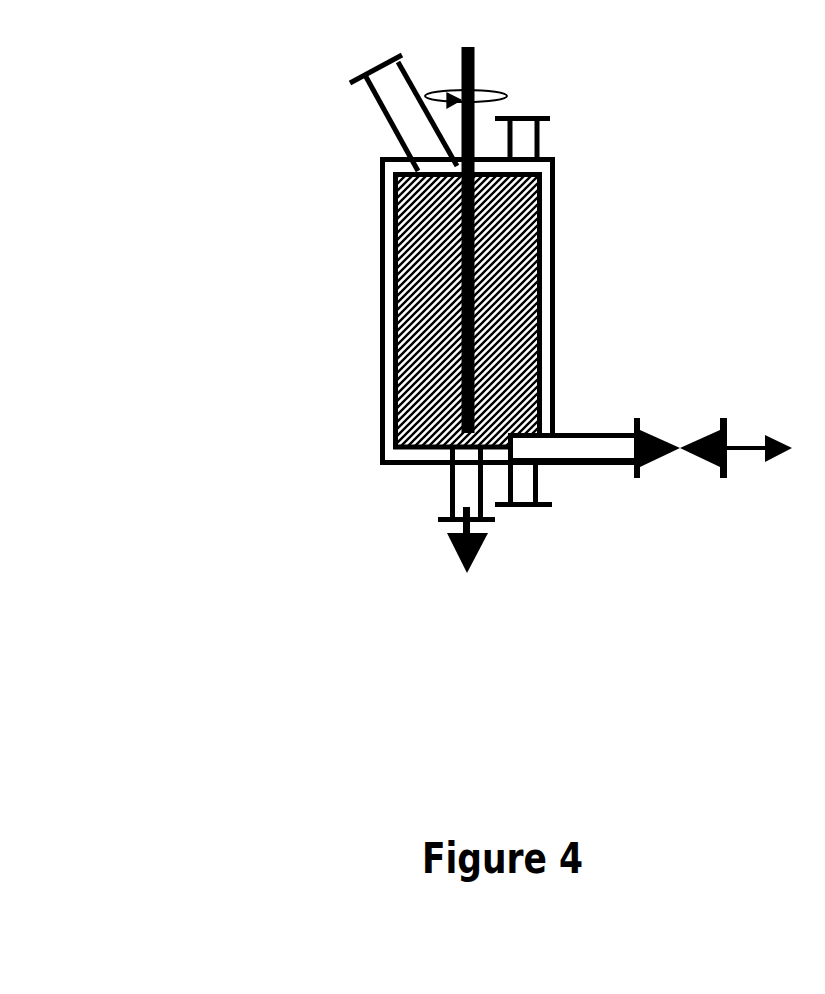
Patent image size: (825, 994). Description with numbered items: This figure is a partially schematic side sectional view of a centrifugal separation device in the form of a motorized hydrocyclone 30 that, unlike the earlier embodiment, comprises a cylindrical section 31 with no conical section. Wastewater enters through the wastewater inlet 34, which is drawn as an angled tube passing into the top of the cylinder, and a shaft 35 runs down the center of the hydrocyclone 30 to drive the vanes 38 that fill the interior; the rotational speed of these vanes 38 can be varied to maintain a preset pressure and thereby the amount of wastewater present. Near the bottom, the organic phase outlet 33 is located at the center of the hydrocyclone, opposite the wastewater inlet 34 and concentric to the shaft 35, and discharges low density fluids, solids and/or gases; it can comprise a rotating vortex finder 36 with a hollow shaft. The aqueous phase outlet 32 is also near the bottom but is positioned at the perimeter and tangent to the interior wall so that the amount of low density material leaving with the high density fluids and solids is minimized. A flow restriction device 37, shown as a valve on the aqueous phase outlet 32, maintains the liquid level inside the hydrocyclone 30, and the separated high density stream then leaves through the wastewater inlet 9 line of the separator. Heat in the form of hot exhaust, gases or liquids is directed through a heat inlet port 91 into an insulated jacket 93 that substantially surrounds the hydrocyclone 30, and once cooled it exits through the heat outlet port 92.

The motorized hydrocyclone 30 is at (155, 309).
The cylindrical section 31 is at (560, 252).
The aqueous phase outlet 32 is at (618, 414).
The organic phase outlet 33 is at (465, 563).
The wastewater inlet 34 is at (333, 75).
The shaft 35 is at (490, 60).
The rotating vortex finder 36 is at (424, 482).
The flow restriction device 37 is at (688, 414).
The vanes 38 is at (390, 305).
The wastewater inlet 9 is at (769, 485).
The heat inlet port 91 is at (530, 525).
The heat outlet port 92 is at (523, 108).
The insulated jacket 93 is at (575, 284).